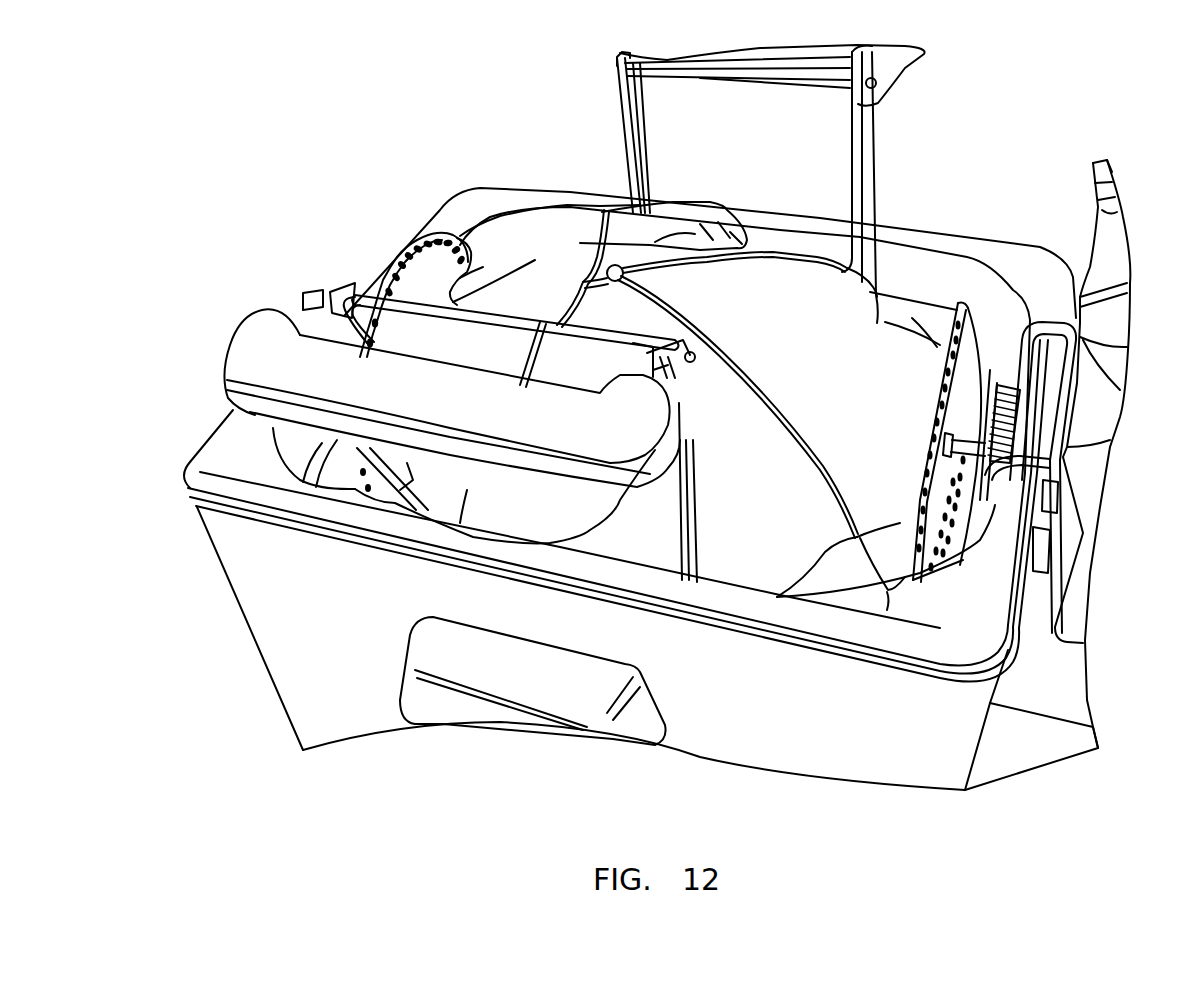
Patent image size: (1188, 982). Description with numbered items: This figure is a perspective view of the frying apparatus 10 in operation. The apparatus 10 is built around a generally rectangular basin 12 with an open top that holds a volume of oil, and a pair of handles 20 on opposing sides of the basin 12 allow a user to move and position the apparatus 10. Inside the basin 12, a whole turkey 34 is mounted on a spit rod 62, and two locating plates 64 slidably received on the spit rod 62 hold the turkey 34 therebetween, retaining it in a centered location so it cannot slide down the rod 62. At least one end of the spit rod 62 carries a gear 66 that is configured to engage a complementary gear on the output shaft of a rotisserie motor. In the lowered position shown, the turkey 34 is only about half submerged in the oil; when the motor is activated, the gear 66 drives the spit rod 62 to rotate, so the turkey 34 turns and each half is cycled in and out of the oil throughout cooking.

The frying apparatus 10 is at (449, 152).
The basin 12 is at (785, 757).
The handles 20 is at (443, 716).
The turkey 34 is at (877, 323).
The spit rod 62 is at (887, 592).
The locating plates 64 is at (410, 250).
The gear 66 is at (1040, 417).